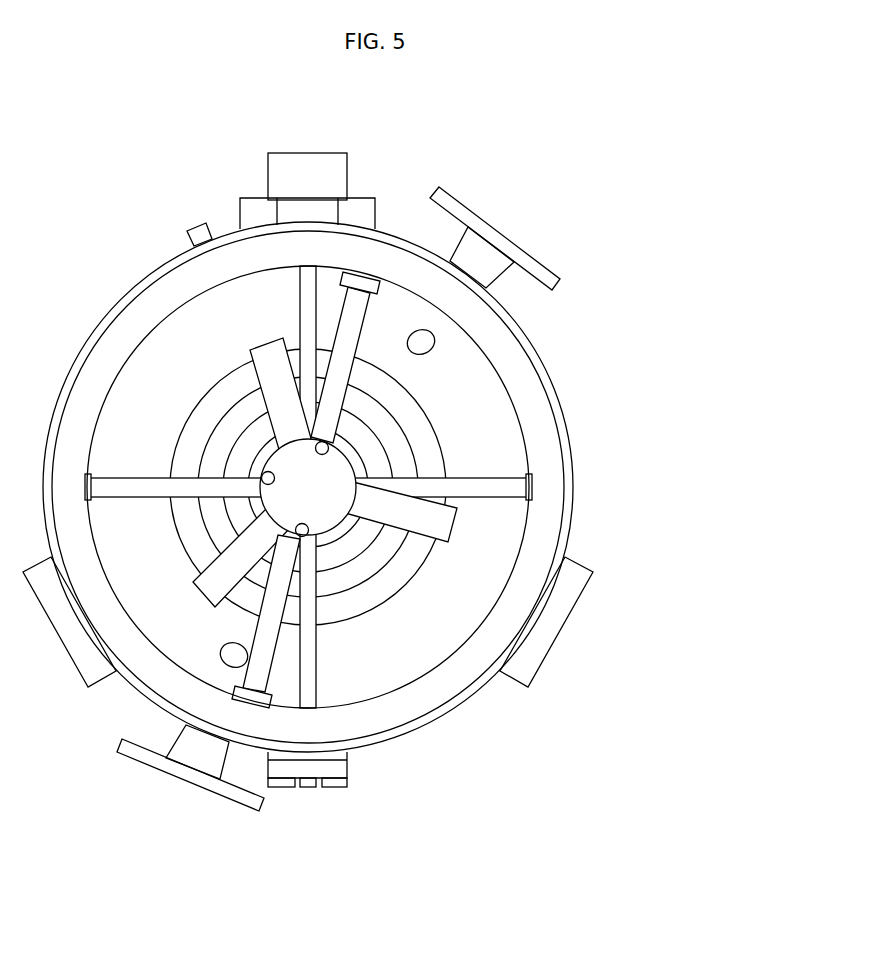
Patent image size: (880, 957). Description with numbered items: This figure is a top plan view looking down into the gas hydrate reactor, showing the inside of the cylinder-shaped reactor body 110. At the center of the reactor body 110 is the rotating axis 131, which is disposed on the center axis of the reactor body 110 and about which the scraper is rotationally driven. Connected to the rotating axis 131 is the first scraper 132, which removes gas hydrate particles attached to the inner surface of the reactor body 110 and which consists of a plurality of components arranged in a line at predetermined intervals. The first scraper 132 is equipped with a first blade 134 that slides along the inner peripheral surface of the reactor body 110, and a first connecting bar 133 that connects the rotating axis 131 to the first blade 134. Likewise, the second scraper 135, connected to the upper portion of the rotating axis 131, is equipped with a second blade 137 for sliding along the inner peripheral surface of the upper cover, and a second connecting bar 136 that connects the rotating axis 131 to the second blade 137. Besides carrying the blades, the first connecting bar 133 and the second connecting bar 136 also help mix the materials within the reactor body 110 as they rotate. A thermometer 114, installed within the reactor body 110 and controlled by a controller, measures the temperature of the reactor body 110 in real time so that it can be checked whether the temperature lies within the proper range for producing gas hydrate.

The reactor body 110 is at (547, 443).
The thermometer 114 is at (493, 487).
The rotating axis 131 is at (343, 468).
The first scraper 132 is at (355, 403).
The first connecting bar 133 is at (357, 325).
The first blade 134 is at (363, 280).
The second scraper 135 is at (471, 473).
The second connecting bar 136 is at (342, 512).
The second blade 137 is at (442, 522).